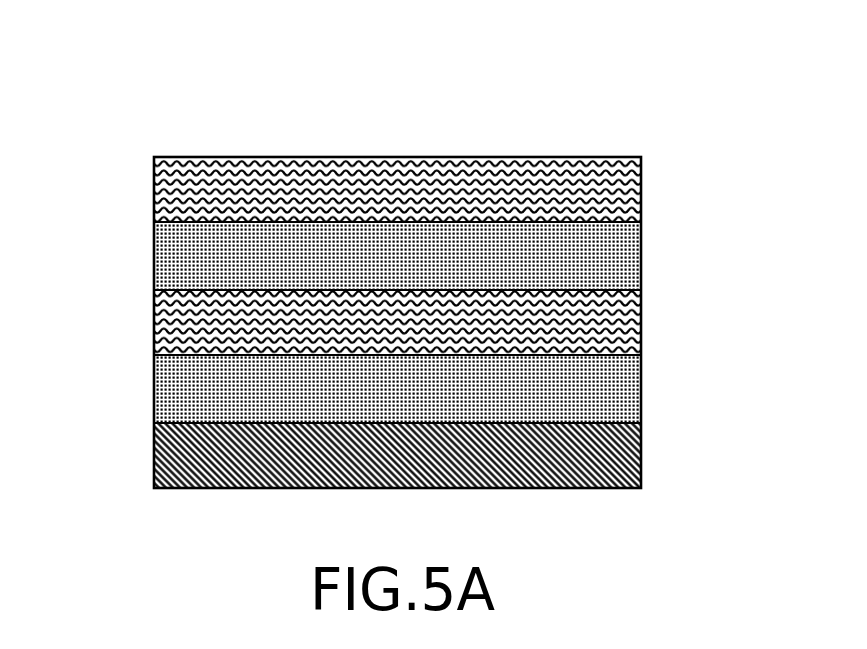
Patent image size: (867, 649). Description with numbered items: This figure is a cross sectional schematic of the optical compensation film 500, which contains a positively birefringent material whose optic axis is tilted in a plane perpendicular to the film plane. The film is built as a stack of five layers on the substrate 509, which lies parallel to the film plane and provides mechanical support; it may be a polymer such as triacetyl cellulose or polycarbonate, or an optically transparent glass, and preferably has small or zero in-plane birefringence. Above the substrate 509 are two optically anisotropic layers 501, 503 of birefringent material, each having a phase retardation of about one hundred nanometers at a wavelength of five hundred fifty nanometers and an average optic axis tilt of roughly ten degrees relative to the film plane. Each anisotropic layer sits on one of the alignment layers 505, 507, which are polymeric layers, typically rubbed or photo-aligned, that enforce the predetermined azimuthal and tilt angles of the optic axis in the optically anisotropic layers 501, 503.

The optical compensation film 500 is at (407, 122).
The optically anisotropic layer 501 is at (641, 325).
The optically anisotropic layer 503 is at (641, 186).
The alignment layer 505 is at (154, 260).
The alignment layer 507 is at (154, 400).
The substrate 509 is at (641, 459).